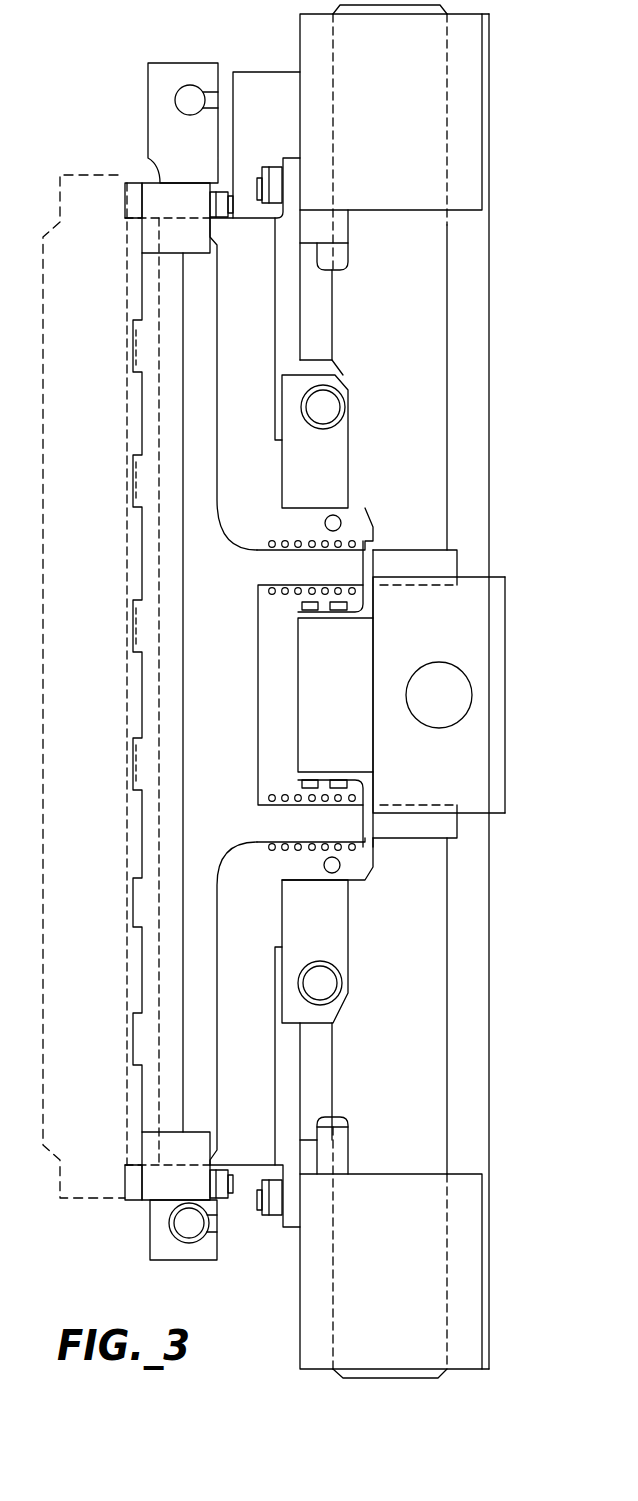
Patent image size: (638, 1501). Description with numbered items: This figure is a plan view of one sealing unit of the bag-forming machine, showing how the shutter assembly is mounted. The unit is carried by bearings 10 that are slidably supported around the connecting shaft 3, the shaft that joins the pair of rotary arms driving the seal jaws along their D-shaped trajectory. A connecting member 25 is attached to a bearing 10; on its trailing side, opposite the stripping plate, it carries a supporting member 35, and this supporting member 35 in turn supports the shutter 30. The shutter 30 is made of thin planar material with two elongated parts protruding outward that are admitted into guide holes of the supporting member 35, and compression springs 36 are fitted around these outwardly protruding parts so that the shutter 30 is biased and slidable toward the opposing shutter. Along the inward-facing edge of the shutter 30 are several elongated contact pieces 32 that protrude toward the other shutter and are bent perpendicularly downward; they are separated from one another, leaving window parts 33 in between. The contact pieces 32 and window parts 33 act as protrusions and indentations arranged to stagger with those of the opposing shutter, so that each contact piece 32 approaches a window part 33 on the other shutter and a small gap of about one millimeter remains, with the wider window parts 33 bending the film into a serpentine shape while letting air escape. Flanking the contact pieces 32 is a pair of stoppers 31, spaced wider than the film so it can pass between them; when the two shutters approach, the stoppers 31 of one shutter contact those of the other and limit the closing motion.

The connecting shaft 3 is at (433, 1120).
The bearings 10 is at (468, 85).
The connecting member 25 is at (497, 767).
The shutter 30 is at (207, 500).
The stoppers 31 is at (140, 192).
The contact pieces 32 is at (132, 483).
The window parts 33 is at (132, 703).
The supporting member 35 is at (477, 638).
The compression springs 36 is at (340, 540).